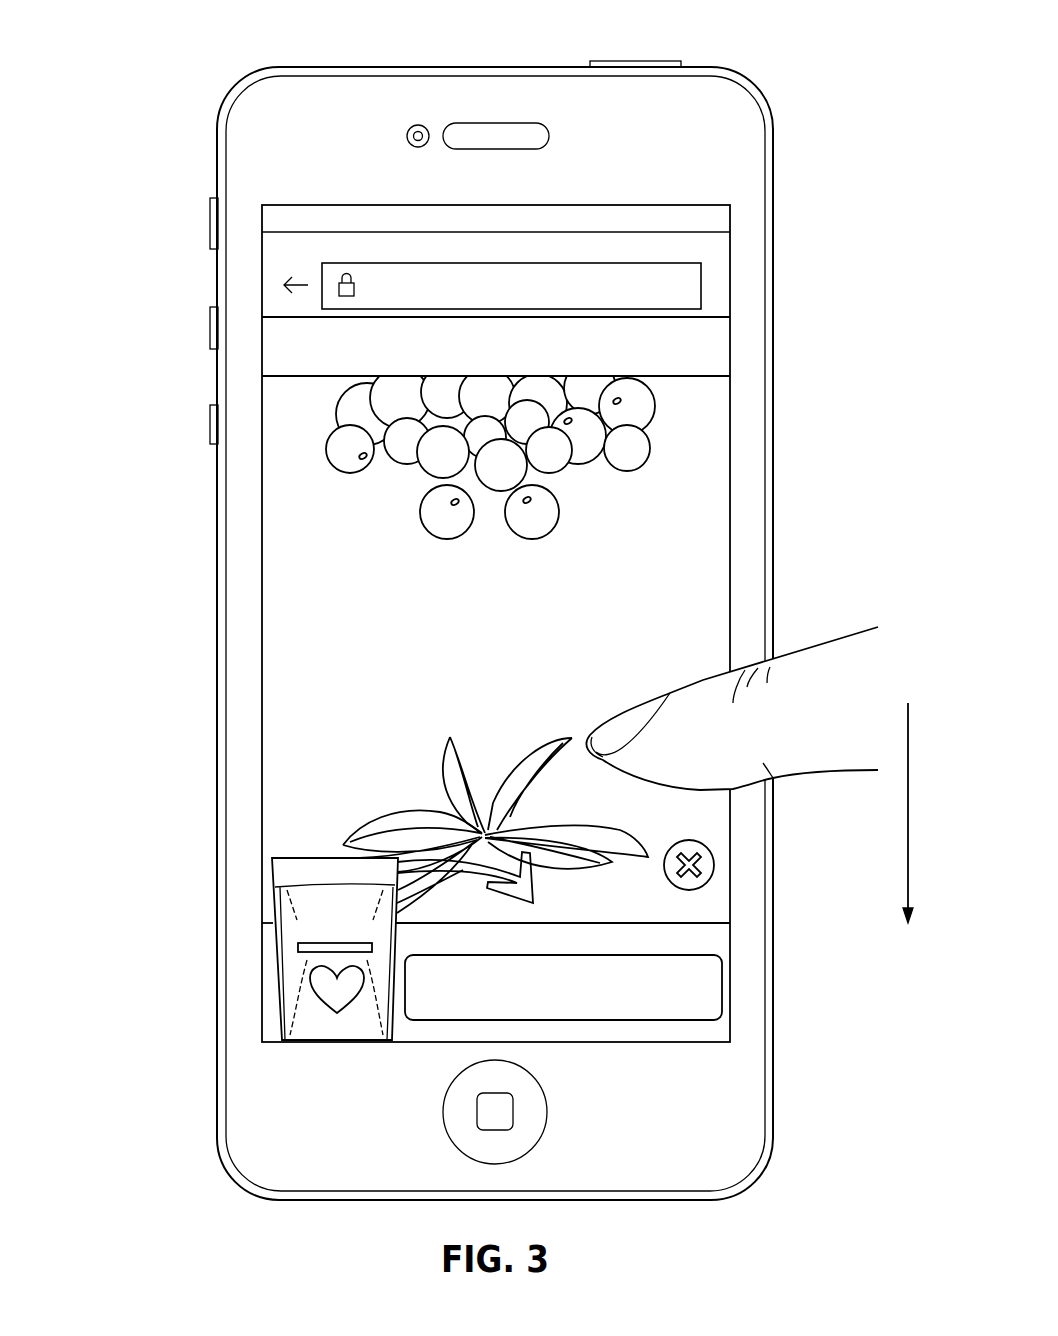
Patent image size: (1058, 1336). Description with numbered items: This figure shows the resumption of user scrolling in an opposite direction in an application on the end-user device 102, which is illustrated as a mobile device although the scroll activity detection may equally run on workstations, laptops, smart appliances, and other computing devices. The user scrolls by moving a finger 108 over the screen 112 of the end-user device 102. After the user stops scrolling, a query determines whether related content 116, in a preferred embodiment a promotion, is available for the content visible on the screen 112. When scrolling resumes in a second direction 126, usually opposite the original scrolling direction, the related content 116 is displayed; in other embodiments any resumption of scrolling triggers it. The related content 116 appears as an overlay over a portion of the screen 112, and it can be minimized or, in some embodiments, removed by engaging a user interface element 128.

The end-user device 102 is at (93, 72).
The finger 108 is at (815, 680).
The screen 112 is at (291, 526).
The related content 116 is at (302, 983).
The second direction 126 is at (908, 812).
The user interface element 128 is at (704, 878).